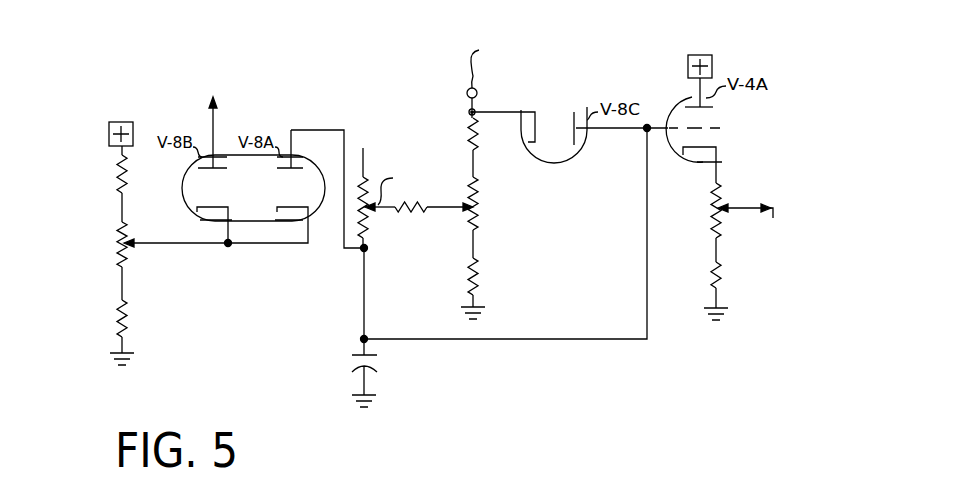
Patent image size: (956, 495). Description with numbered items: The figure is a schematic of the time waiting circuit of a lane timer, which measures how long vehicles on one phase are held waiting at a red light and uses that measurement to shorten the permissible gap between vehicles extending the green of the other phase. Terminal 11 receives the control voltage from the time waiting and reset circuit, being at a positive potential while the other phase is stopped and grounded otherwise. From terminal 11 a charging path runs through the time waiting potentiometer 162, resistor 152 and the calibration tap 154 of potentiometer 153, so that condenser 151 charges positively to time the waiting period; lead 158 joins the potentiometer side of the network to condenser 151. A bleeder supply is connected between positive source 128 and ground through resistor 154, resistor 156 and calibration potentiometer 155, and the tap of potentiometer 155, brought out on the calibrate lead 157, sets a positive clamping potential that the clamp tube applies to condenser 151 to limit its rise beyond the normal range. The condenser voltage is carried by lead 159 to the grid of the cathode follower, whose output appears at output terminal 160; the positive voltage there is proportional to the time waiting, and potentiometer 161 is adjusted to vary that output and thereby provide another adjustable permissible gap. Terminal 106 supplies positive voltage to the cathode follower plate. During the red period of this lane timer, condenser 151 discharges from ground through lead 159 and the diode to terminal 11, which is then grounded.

The terminal 11 is at (478, 93).
The positive supply terminal 106 is at (687, 68).
The positive source 128 is at (108, 133).
The condenser 151 is at (379, 361).
The resistor 152 is at (413, 212).
The potentiometer 153 is at (476, 200).
The calibration tap 154 is at (116, 172).
The calibration potentiometer 155 is at (118, 243).
The resistor 156 is at (117, 316).
The calibrate lead 157 is at (165, 243).
The lead 158 is at (366, 287).
The lead 159 is at (532, 339).
The output terminal 160 is at (745, 206).
The potentiometer 161 is at (712, 208).
The time waiting potentiometer 162 is at (365, 180).